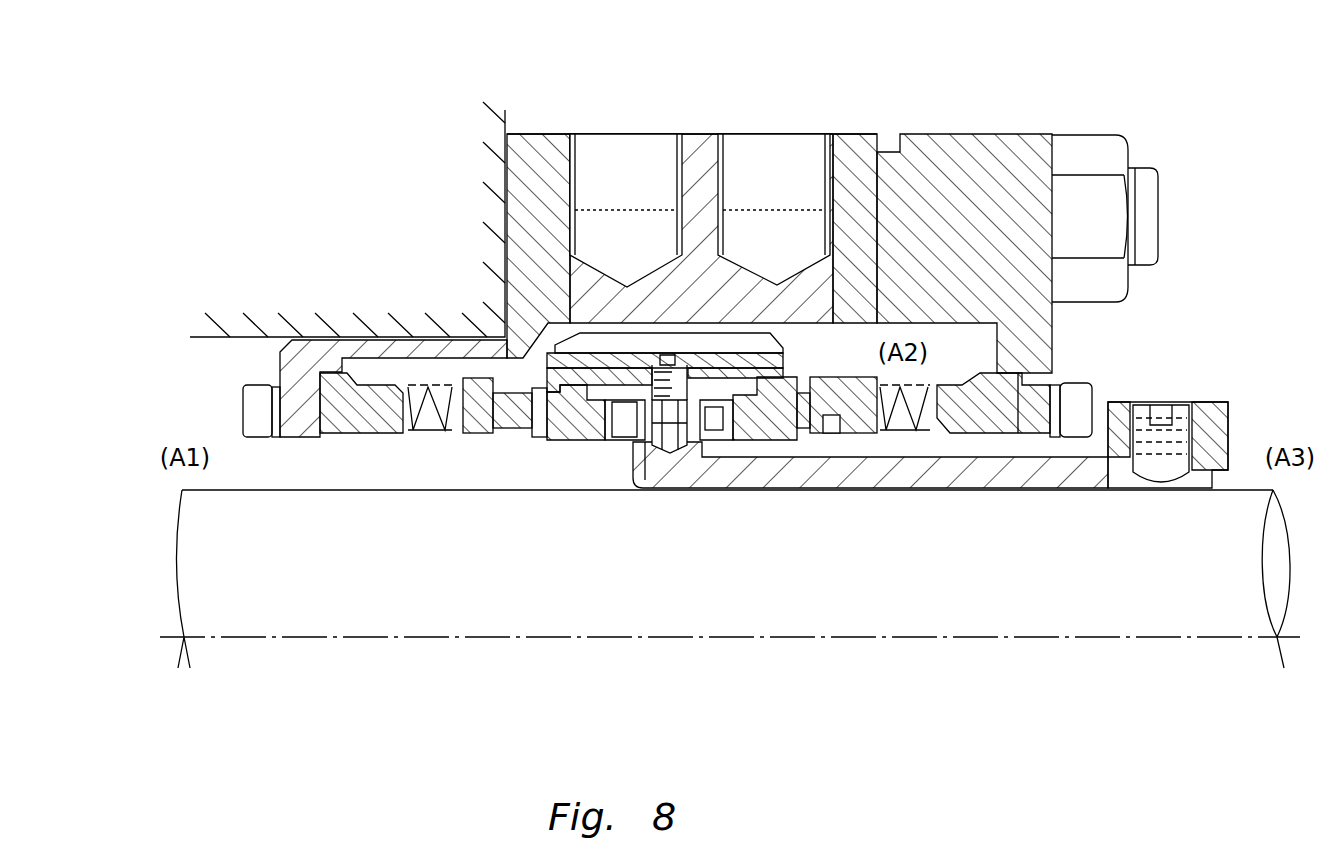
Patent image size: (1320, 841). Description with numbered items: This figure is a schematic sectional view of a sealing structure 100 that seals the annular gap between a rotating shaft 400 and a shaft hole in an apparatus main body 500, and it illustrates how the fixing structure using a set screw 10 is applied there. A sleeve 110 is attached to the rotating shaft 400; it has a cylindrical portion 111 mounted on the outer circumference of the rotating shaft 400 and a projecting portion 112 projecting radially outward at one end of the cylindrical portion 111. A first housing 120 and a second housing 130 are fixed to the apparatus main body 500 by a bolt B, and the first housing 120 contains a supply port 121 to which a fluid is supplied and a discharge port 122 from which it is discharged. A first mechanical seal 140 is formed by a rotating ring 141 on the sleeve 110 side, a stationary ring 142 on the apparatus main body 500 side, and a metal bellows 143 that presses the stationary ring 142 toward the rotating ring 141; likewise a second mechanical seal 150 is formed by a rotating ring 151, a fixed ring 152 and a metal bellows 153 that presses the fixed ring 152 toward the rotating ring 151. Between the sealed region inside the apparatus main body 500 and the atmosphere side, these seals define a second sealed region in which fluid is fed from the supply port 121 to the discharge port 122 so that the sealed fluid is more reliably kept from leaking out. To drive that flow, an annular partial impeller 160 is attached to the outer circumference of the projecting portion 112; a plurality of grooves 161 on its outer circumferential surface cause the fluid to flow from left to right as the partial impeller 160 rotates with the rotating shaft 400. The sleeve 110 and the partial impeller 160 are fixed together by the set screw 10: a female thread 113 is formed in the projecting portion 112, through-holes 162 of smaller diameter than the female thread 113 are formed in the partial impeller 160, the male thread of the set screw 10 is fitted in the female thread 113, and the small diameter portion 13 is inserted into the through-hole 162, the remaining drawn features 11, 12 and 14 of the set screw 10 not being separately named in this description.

The set screw 10 is at (668, 208).
The pin 11 is at (687, 442).
The engagement groove 12 is at (648, 368).
The small diameter portion 13 is at (678, 372).
The pin head 14 is at (670, 365).
The sealing structure 100 is at (1207, 304).
The sleeve 110 is at (893, 565).
The cylindrical portion 111 is at (842, 475).
The projecting portion 112 is at (605, 440).
The female thread 113 is at (655, 442).
The first housing 120 is at (692, 181).
The supply port 121 is at (600, 340).
The discharge port 122 is at (823, 160).
The second housing 130 is at (990, 165).
The first mechanical seal 140 is at (424, 543).
The rotating ring 141 is at (580, 440).
The stationary ring 142 is at (483, 437).
The metal bellows 143 is at (420, 437).
The second mechanical seal 150 is at (923, 582).
The rotating ring 151 is at (772, 440).
The fixed ring 152 is at (822, 440).
The metal bellows 153 is at (903, 440).
The partial impeller 160 is at (531, 263).
The grooves 161 is at (597, 353).
The through-holes 162 is at (662, 358).
The bolt B is at (1105, 148).
The rotating shaft 400 is at (730, 579).
The apparatus main body 500 is at (347, 219).